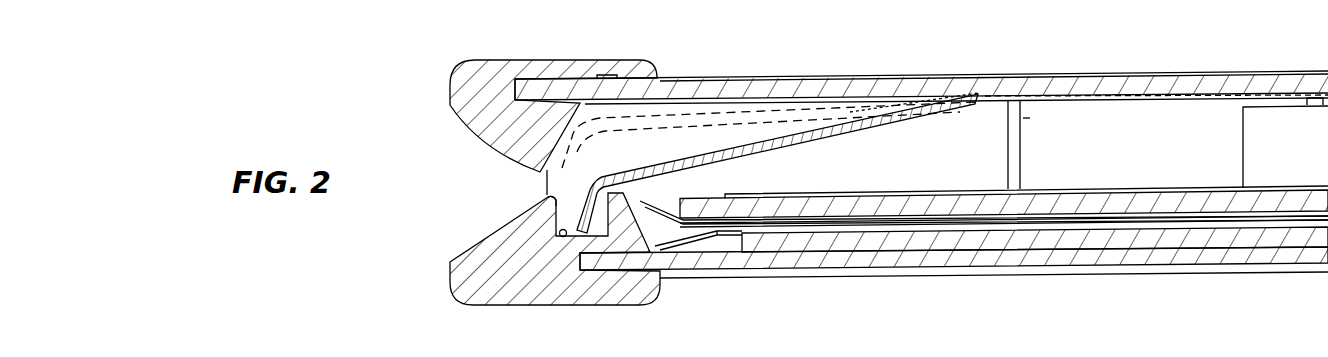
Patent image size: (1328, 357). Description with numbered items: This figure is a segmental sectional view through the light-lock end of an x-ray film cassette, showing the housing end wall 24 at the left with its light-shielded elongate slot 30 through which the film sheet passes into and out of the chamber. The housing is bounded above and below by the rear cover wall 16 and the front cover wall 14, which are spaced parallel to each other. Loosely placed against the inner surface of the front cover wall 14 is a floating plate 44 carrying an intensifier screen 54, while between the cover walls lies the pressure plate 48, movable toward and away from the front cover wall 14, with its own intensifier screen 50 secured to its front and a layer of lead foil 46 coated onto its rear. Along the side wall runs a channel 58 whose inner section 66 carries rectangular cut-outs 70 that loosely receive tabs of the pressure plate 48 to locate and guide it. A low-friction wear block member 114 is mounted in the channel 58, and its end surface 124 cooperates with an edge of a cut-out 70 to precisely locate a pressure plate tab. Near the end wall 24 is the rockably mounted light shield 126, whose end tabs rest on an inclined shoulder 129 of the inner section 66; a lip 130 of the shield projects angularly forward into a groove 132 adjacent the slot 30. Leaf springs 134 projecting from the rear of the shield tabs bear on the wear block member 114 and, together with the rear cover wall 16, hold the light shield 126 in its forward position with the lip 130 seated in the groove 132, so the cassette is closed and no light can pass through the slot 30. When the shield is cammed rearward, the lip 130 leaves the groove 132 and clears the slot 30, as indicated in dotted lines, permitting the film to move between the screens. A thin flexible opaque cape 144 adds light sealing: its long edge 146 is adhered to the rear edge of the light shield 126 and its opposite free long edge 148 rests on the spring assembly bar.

The front cover wall 14 is at (800, 263).
The rear cover wall 16 is at (775, 93).
The end wall 24 is at (450, 140).
The slot 30 is at (540, 183).
The floating plate 44 is at (917, 243).
The lead foil 46 is at (963, 190).
The pressure plate 48 is at (825, 200).
The intensifier screen 50 is at (870, 197).
The screen 54 is at (717, 230).
The channel 58 is at (1068, 354).
The inner section 66 is at (993, 108).
The cut-out 70 is at (1023, 118).
The wear block member 114 is at (1267, 123).
The end surface 124 is at (1243, 137).
The light shield 126 is at (640, 170).
The inclined shoulder 129 is at (905, 118).
The lip 130 is at (553, 208).
The groove 132 is at (557, 236).
The leaf spring 134 is at (1180, 102).
The cape 144 is at (1108, 100).
The long edge 146 is at (833, 127).
The long edge 148 is at (1310, 95).